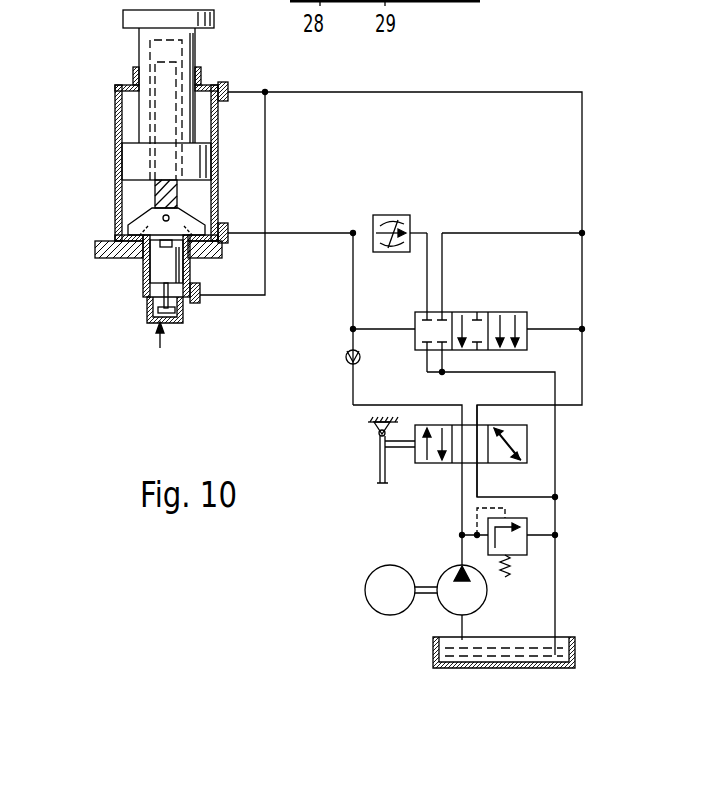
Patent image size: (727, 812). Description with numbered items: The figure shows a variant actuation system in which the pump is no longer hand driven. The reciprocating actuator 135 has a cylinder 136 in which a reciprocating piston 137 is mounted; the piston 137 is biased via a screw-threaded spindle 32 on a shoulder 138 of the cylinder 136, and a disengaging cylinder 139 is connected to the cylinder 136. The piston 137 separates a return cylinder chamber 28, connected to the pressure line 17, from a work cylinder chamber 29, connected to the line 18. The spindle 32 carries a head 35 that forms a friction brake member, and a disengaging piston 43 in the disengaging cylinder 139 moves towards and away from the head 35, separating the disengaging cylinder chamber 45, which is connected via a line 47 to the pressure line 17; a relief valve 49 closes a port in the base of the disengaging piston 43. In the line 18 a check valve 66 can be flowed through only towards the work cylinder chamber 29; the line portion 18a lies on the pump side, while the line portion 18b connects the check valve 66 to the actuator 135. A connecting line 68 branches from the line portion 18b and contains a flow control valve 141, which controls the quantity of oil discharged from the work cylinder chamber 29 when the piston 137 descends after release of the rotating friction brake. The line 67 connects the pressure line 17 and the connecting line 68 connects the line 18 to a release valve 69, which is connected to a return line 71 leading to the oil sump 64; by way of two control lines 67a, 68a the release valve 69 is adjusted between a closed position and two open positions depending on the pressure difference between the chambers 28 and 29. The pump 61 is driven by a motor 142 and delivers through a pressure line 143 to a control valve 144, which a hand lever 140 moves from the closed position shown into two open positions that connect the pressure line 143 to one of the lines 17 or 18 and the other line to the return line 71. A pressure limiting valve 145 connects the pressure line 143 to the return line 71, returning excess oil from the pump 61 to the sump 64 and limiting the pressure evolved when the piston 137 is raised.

The reciprocating actuator 135 is at (100, 127).
The reciprocating piston 137 is at (133, 165).
The screw-threaded spindle 32 is at (155, 187).
The cylinder 136 is at (118, 212).
The head 35 is at (132, 232).
The shoulder 138 is at (134, 252).
The disengaging cylinder 139 is at (146, 285).
The disengaging piston 43 is at (180, 270).
The disengaging cylinder chamber 45 is at (147, 300).
The relief valve 49 is at (160, 351).
The line 47 is at (267, 280).
The return cylinder chamber 28 is at (208, 122).
The work cylinder chamber 29 is at (203, 192).
The pressure line 17 is at (527, 90).
The line 18 is at (346, 315).
The line portion 18a is at (390, 402).
The line portion 18b is at (321, 236).
The check valve 66 is at (348, 362).
The flow control valve 141 is at (402, 215).
The connecting line 68 is at (427, 268).
The control line 68a is at (382, 328).
The line 67 is at (512, 232).
The control line 67a is at (548, 328).
The release valve 69 is at (485, 296).
The return line 71 is at (557, 480).
The control valve 144 is at (435, 465).
The hand lever 140 is at (380, 470).
The pressure line 143 is at (461, 520).
The pressure limiting valve 145 is at (527, 558).
The motor 142 is at (383, 606).
The pump 61 is at (478, 601).
The oil sump 64 is at (433, 648).